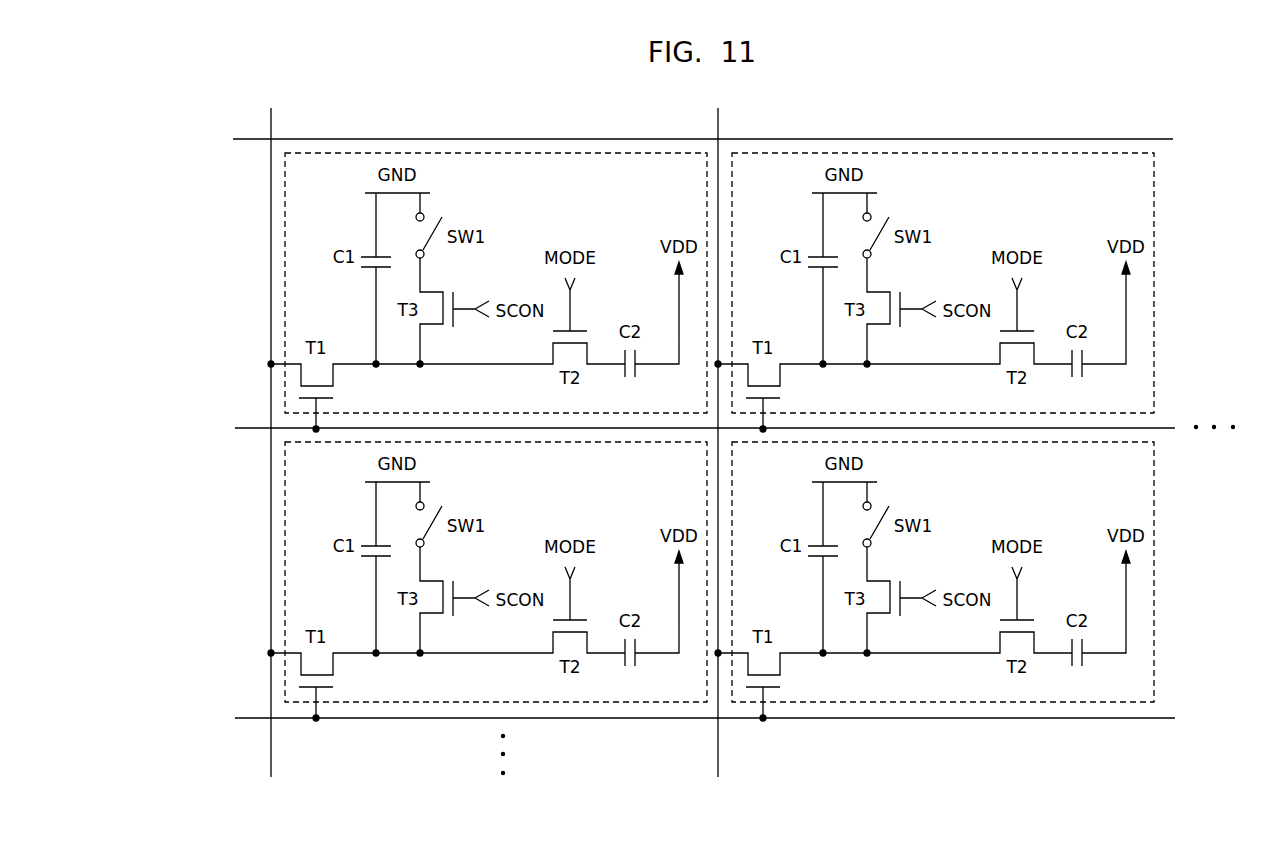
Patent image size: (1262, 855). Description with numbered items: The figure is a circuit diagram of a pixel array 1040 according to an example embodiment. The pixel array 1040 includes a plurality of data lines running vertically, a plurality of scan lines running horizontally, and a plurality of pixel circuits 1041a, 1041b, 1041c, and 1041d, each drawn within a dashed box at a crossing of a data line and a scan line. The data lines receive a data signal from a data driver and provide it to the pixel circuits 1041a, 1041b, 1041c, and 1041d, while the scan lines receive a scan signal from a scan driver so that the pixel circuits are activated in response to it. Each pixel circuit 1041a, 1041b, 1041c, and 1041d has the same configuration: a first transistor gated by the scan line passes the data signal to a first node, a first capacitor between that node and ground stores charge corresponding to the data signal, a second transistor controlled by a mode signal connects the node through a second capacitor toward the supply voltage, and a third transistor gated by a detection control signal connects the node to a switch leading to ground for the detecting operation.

The pixel array 1040 is at (1036, 111).
The pixel circuit 1041a is at (285, 258).
The pixel circuit 1041b is at (1155, 258).
The pixel circuit 1041c is at (285, 539).
The pixel circuit 1041d is at (1155, 539).